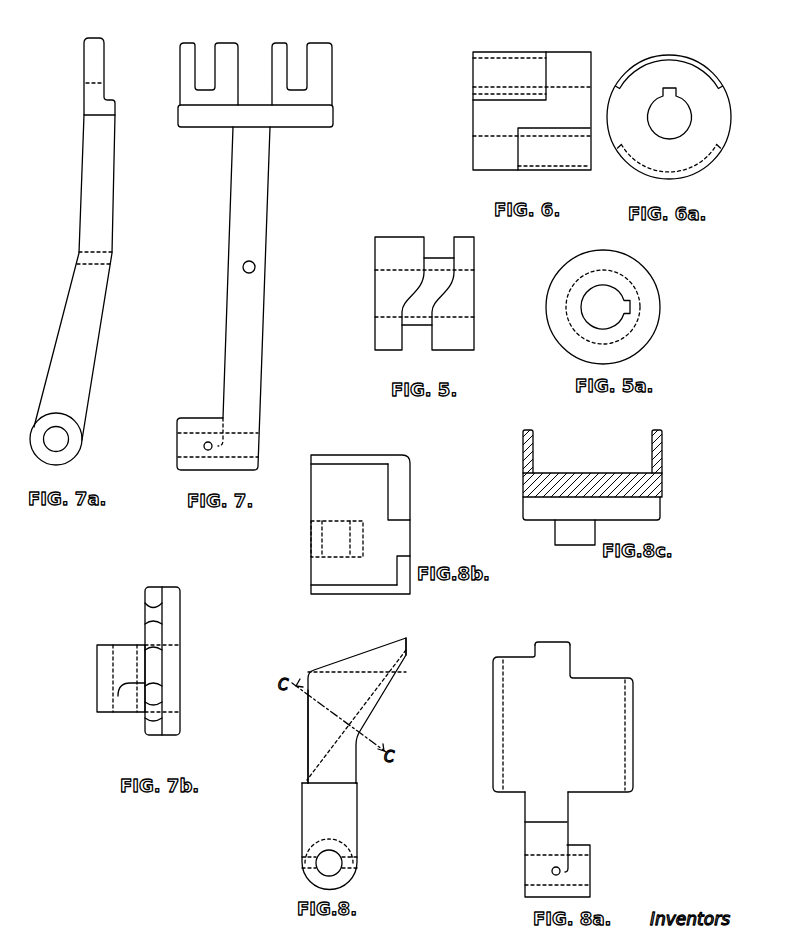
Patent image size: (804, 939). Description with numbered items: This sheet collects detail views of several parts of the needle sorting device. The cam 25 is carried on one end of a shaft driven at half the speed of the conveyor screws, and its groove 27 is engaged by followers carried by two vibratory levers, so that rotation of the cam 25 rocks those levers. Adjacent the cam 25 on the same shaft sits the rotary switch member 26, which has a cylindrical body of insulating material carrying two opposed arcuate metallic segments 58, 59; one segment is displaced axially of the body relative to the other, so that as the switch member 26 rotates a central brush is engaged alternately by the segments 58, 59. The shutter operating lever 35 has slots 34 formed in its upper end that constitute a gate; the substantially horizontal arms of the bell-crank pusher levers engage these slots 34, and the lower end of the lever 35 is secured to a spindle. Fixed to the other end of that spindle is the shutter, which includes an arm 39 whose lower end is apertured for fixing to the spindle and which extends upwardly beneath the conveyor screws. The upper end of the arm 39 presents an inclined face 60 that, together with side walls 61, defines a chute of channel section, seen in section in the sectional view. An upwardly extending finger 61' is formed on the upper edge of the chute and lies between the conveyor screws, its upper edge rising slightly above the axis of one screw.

In FIG. 5, the cam 25 is at (460, 340).
In FIG. 5A, the cam 25 is at (645, 265).
In FIG. 6, the rotary switch member 26 is at (572, 72).
In FIG. 6A, the rotary switch member 26 is at (645, 90).
In FIG. 5, the groove 27 is at (453, 252).
In FIG. 5A, the groove 27 is at (640, 325).
In FIG. 7A, the slots 34 is at (102, 83).
In FIG. 7, the slots 34 is at (200, 43).
In FIG. 7B, the slots 34 is at (150, 604).
In FIG. 7A, the shutter operating lever 35 is at (90, 325).
In FIG. 7, the shutter operating lever 35 is at (252, 318).
In FIG. 7B, the shutter operating lever 35 is at (173, 669).
In FIG. 8C, the shutter arm 39 is at (565, 535).
In FIG. 8, the shutter arm 39 is at (343, 812).
In FIG. 8A, the shutter arm 39 is at (553, 833).
In FIG. 6, the arcuate metallic segment 58 is at (503, 65).
In FIG. 6A, the arcuate metallic segment 58 is at (685, 58).
In FIG. 6, the arcuate metallic segment 59 is at (555, 152).
In FIG. 6A, the arcuate metallic segment 59 is at (700, 168).
In FIG. 8B, the inclined face 60 is at (322, 502).
In FIG. 8C, the inclined face 60 is at (596, 470).
In FIG. 8, the inclined face 60 is at (322, 746).
In FIG. 8B, the side walls 61 is at (354, 522).
In FIG. 8C, the side walls 61 is at (593, 431).
In FIG. 8, the side walls 61 is at (281, 736).
In FIG. 8A, the side walls 61 is at (563, 718).
In FIG. 8B, the finger 61' is at (420, 524).
In FIG. 8, the finger 61' is at (429, 645).
In FIG. 8A, the finger 61' is at (569, 624).